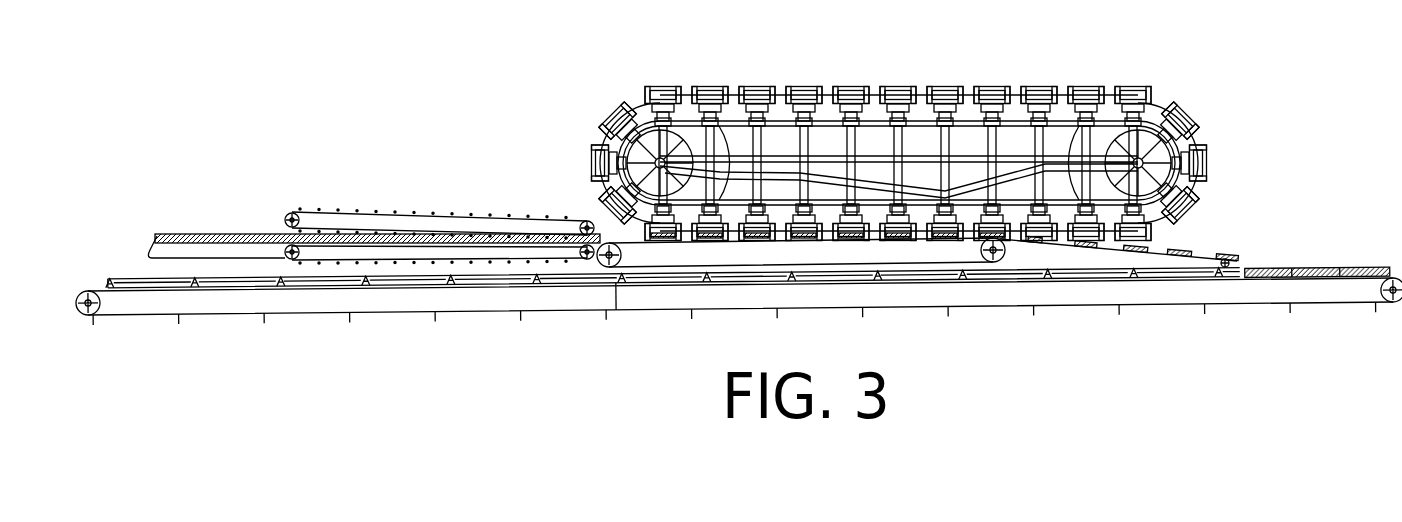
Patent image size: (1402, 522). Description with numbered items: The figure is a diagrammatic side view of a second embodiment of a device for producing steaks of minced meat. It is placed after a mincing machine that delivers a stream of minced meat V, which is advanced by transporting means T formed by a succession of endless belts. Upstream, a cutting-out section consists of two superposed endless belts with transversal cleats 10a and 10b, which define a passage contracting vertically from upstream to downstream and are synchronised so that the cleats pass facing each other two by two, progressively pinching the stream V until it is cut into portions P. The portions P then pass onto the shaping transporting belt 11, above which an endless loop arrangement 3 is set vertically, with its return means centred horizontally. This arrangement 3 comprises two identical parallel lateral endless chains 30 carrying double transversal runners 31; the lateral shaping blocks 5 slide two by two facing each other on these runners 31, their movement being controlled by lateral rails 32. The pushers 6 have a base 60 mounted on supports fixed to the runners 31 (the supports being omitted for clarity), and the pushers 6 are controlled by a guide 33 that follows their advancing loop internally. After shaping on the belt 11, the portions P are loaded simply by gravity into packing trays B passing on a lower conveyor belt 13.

The endless loop arrangement 3 is at (907, 123).
The lateral shaping blocks 5 is at (1207, 163).
The pushers 6 is at (600, 138).
The endless belt with transversal cleats 10a is at (347, 230).
The endless belt with transversal cleats 10b is at (405, 222).
The shaping transporting belt 11 is at (952, 252).
The lower conveyor belt 13 is at (327, 303).
The lateral endless chains 30 is at (645, 100).
The double transversal runners 31 is at (860, 90).
The lateral rails 32 is at (1062, 122).
The guide 33 is at (774, 150).
The base 60 is at (903, 112).
The transporting means T is at (128, 252).
The stream of minced meat V is at (220, 233).
The portions P is at (1190, 248).
The packing trays B is at (1242, 272).